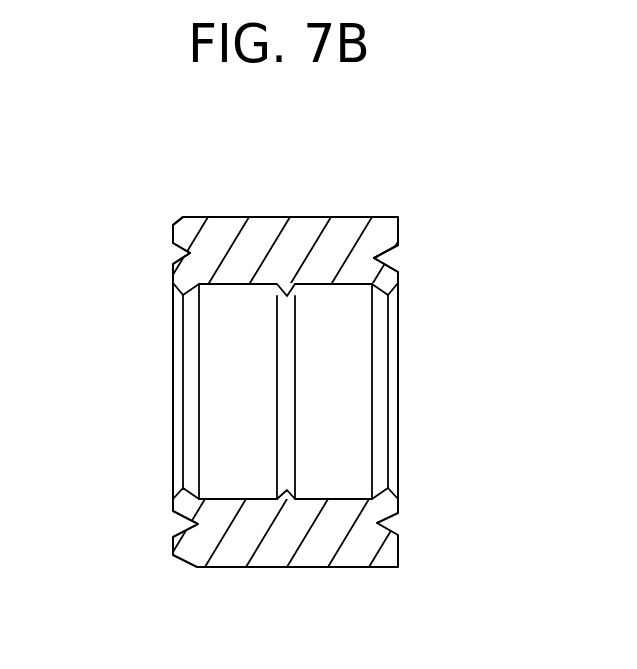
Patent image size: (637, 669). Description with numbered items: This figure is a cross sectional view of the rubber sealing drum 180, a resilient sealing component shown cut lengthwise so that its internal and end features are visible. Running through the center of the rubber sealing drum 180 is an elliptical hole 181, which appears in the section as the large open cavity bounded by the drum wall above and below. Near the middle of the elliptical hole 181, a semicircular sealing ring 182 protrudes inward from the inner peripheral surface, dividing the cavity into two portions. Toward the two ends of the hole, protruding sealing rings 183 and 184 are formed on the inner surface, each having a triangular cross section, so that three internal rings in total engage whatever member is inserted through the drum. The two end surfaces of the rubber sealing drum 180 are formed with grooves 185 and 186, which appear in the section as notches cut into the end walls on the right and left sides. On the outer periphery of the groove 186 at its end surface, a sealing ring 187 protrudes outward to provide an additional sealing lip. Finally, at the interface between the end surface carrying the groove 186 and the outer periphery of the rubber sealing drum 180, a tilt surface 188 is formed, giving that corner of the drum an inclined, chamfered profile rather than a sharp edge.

The rubber sealing drum 180 is at (290, 217).
The elliptical hole 181 is at (331, 286).
The semicircular sealing ring 182 is at (291, 292).
The protruding sealing ring 183 is at (386, 291).
The protruding sealing ring 184 is at (182, 302).
The groove 185 is at (398, 251).
The groove 186 is at (186, 255).
The sealing ring 187 is at (172, 243).
The tilt surface 188 is at (183, 218).